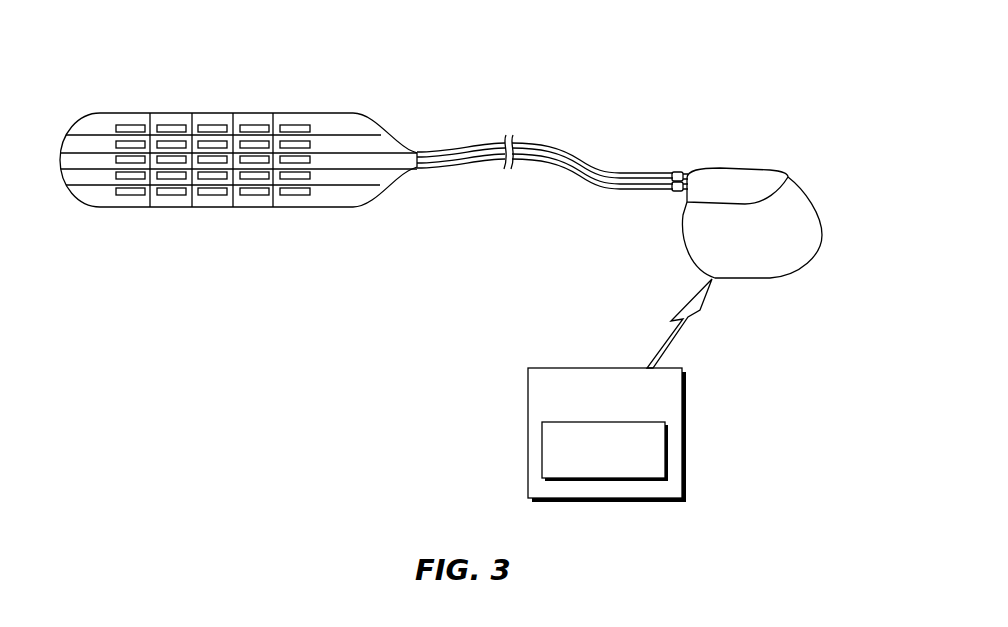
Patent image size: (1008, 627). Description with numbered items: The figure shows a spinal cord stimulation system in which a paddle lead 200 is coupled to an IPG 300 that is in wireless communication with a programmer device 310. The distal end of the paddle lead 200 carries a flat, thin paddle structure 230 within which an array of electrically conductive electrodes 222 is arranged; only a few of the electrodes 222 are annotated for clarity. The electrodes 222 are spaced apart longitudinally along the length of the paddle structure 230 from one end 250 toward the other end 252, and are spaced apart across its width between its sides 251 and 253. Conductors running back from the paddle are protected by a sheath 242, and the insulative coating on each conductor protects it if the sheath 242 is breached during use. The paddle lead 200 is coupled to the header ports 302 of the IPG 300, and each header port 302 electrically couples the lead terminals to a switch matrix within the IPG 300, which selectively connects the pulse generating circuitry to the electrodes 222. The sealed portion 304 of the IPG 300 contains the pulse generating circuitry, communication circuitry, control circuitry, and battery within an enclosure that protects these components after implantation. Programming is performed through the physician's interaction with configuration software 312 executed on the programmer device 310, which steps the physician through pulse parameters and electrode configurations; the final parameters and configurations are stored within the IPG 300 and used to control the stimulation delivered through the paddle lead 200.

The paddle lead 200 is at (568, 82).
The end 250 is at (123, 66).
The paddle structure 230 is at (167, 112).
The electrodes 222 is at (297, 113).
The side 253 is at (241, 113).
The side 251 is at (255, 208).
The end 252 is at (414, 117).
The sheath 242 is at (598, 167).
The header ports 302 is at (678, 173).
The sealed portion 304 is at (737, 170).
The IPG 300 is at (818, 182).
The programmer device 310 is at (527, 394).
The configuration software 312 is at (541, 450).